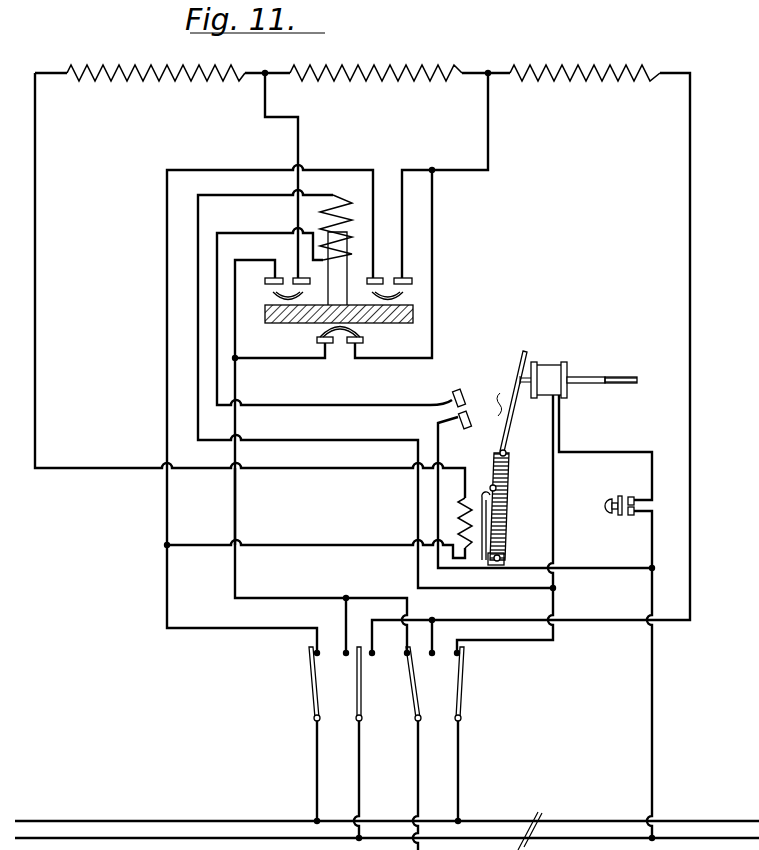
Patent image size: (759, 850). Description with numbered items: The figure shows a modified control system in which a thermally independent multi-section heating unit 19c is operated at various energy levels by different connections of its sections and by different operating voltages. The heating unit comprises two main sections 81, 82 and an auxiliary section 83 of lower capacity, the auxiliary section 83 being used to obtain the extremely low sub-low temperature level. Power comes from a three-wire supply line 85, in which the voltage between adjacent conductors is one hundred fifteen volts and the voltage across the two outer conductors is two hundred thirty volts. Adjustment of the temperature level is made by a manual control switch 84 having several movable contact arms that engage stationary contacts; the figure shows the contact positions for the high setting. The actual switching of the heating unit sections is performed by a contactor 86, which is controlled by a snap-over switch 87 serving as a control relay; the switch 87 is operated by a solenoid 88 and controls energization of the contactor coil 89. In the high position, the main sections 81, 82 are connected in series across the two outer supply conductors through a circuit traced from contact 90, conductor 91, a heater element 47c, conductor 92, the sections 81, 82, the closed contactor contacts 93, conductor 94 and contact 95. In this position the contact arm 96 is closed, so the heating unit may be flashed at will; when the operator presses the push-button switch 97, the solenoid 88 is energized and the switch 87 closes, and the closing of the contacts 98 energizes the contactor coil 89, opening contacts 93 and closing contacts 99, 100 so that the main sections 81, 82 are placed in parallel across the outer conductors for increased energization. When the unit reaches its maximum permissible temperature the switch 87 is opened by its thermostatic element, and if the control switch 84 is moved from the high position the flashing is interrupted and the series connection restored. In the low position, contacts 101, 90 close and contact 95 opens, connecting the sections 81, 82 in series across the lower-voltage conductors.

The multi-section heating unit 19c is at (430, 52).
The main heating unit section 81 is at (158, 82).
The main heating unit section 82 is at (366, 82).
The auxiliary heating unit section 83 is at (597, 82).
The manual control switch 84 is at (395, 684).
The three-wire supply line 85 is at (387, 823).
The contactor 86 is at (367, 285).
The snap-over switch 87 is at (500, 376).
The solenoid 88 is at (540, 364).
The contactor coil 89 is at (343, 214).
The contact 90 is at (312, 695).
The conductor 91 is at (342, 545).
The conductor 92 is at (38, 434).
The contactor contacts 93 is at (328, 344).
The conductor 94 is at (238, 521).
The contact 95 is at (417, 700).
The contact arm 96 is at (464, 668).
The push-button switch 97 is at (613, 499).
The contacts 98 is at (466, 395).
The contactor contacts 99 is at (278, 276).
The contactor contacts 100 is at (389, 277).
The contact 101 is at (361, 696).
The resistor 47c is at (458, 509).